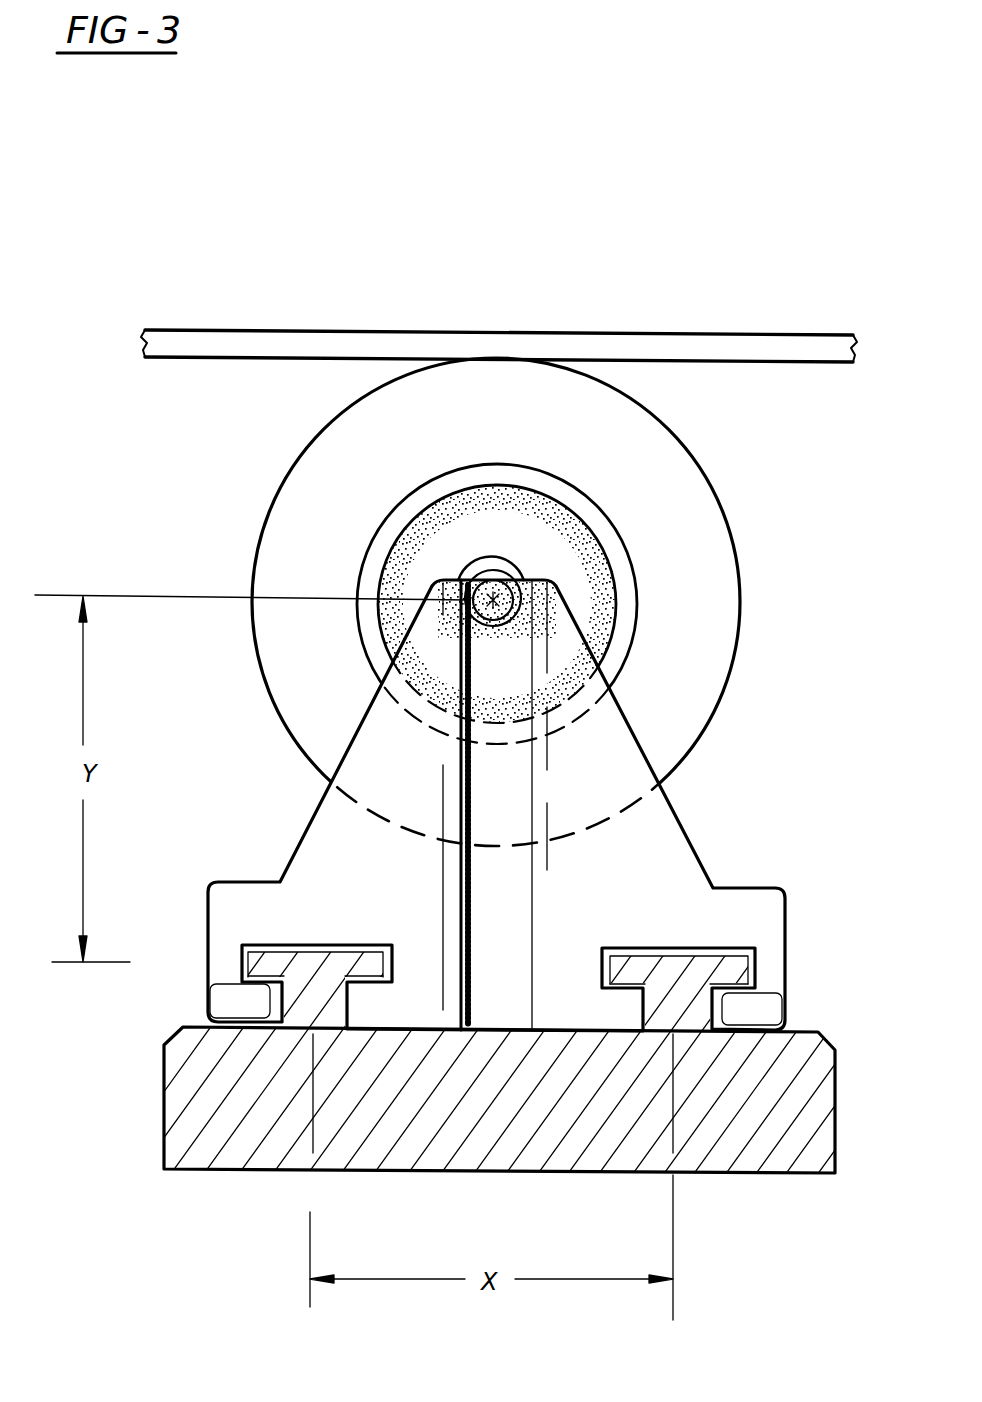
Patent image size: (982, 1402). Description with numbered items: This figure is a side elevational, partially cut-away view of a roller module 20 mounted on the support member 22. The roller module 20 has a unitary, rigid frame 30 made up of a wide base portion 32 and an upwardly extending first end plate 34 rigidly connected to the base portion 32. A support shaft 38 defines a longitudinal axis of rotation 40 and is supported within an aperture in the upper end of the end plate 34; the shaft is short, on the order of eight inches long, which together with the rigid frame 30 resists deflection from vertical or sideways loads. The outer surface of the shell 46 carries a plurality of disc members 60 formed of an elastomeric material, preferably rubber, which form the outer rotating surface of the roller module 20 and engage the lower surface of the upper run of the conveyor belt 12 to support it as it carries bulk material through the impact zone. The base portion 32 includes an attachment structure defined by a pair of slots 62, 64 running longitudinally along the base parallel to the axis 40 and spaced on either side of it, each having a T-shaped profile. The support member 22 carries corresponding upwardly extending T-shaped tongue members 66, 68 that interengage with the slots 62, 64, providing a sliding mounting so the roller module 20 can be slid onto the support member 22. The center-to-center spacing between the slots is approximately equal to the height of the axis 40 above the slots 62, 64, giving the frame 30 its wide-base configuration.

The conveyor belt 12 is at (237, 338).
The roller module 20 is at (737, 797).
The support member 22 is at (167, 1086).
The frame 30 is at (279, 866).
The base portion 32 is at (787, 960).
The first end plate 34 is at (335, 812).
The support shaft 38 is at (508, 575).
The longitudinal axis of rotation 40 is at (515, 612).
The shell 46 is at (385, 532).
The disc members 60 is at (330, 437).
The slot 62 is at (740, 950).
The slot 64 is at (260, 940).
The T-shaped tongue member 66 is at (732, 973).
The T-shaped tongue member 68 is at (276, 975).